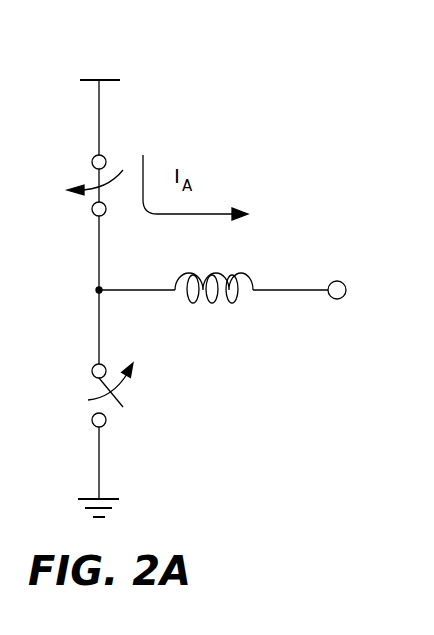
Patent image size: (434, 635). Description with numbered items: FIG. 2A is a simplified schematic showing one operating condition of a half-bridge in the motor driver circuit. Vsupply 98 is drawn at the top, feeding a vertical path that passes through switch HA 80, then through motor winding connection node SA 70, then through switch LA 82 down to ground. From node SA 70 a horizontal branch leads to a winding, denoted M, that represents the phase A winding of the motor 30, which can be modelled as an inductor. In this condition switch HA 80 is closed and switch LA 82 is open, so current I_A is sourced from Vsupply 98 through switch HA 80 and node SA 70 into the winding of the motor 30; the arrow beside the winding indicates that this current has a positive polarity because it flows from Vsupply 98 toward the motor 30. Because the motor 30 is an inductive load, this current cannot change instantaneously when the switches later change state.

The Vsupply 98 is at (107, 47).
The switch HA 80 is at (74, 222).
The motor winding connection node SA 70 is at (112, 288).
The switch LA 82 is at (90, 394).
The motor 30 is at (212, 303).